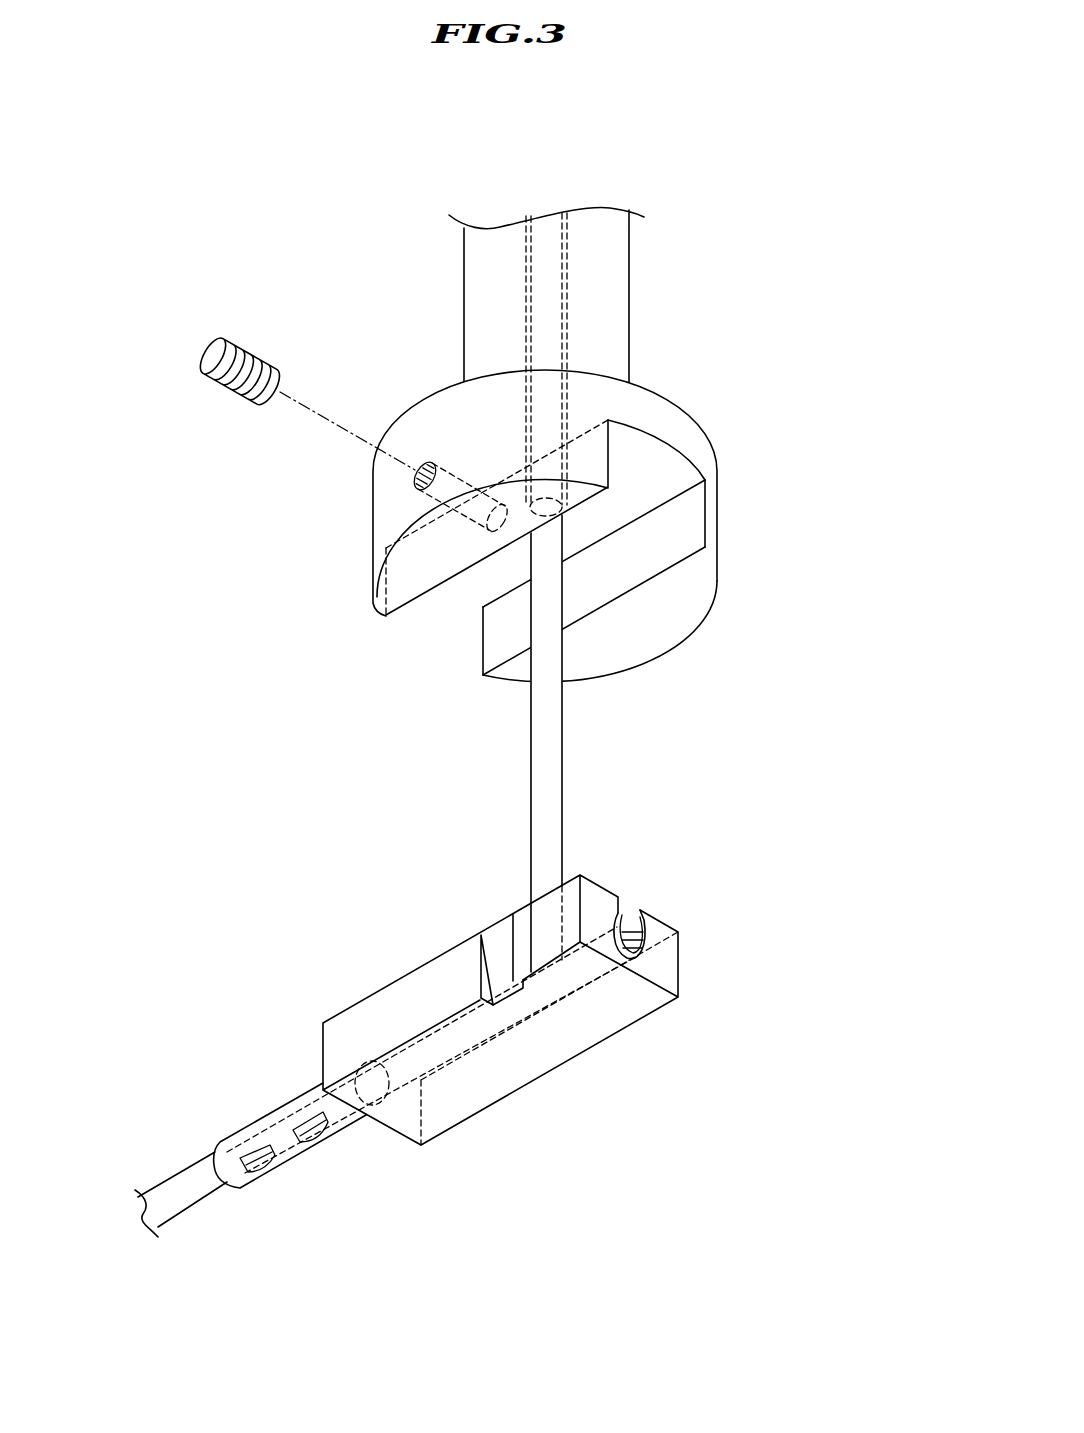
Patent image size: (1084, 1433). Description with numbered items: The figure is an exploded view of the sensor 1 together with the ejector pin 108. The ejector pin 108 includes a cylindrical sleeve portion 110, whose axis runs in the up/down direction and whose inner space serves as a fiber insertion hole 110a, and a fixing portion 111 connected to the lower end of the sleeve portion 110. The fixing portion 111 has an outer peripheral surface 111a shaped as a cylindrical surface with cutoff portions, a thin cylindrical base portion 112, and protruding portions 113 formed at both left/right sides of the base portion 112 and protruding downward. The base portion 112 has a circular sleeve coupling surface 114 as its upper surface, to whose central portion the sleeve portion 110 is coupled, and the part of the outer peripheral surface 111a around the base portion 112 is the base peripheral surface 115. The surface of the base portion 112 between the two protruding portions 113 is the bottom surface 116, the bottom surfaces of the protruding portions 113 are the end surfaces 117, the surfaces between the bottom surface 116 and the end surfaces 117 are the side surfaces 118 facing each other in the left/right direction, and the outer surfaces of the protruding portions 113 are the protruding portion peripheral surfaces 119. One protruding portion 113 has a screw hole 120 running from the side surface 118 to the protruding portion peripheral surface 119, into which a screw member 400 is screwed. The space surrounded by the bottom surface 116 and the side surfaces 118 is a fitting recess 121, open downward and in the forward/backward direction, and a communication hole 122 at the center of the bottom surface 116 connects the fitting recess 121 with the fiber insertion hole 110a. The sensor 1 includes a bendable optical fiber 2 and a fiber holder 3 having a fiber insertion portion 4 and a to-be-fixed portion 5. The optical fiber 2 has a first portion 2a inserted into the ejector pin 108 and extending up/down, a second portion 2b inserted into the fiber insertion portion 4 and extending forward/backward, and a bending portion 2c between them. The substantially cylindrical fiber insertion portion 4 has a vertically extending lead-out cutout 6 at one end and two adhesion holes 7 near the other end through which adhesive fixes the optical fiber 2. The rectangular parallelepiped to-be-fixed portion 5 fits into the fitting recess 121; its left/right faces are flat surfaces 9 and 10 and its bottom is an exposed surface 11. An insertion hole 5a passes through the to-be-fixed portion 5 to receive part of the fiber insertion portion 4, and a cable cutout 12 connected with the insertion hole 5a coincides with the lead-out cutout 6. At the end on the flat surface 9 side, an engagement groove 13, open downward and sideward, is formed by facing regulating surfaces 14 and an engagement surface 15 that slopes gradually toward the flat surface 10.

The sensor 1 is at (505, 1075).
The optical fiber 2 is at (563, 743).
The first portion 2a is at (527, 280).
The second portion 2b is at (263, 1112).
The bending portion 2c is at (538, 965).
The fiber holder 3 is at (455, 1322).
The fiber insertion portion 4 is at (360, 1125).
The to-be-fixed portion 5 is at (437, 1128).
The insertion hole 5a is at (643, 952).
The lead-out cutout 6 is at (620, 905).
The adhesion holes 7 is at (323, 1143).
The flat surface 9 is at (368, 1027).
The flat surface 10 is at (605, 970).
The exposed surface 11 is at (607, 1015).
The cable cutout 12 is at (630, 923).
The engagement groove 13 is at (487, 930).
The regulating surfaces 14 is at (480, 988).
The engagement surface 15 is at (513, 918).
The ejector pin 108 is at (618, 232).
The sleeve portion 110 is at (618, 244).
The fiber insertion hole 110a is at (565, 240).
The fixing portion 111 is at (428, 412).
The outer peripheral surface 111a is at (457, 400).
The base portion 112 is at (643, 393).
The protruding portions 113 is at (393, 520).
The sleeve coupling surface 114 is at (395, 422).
The base peripheral surface 115 is at (665, 410).
The bottom surface 116 is at (668, 467).
The end surfaces 117 is at (380, 583).
The side surfaces 118 is at (693, 517).
The protruding portion peripheral surfaces 119 is at (400, 510).
The screw hole 120 is at (418, 482).
The fitting recess 121 is at (480, 598).
The communication hole 122 is at (537, 518).
The screw member 400 is at (250, 355).